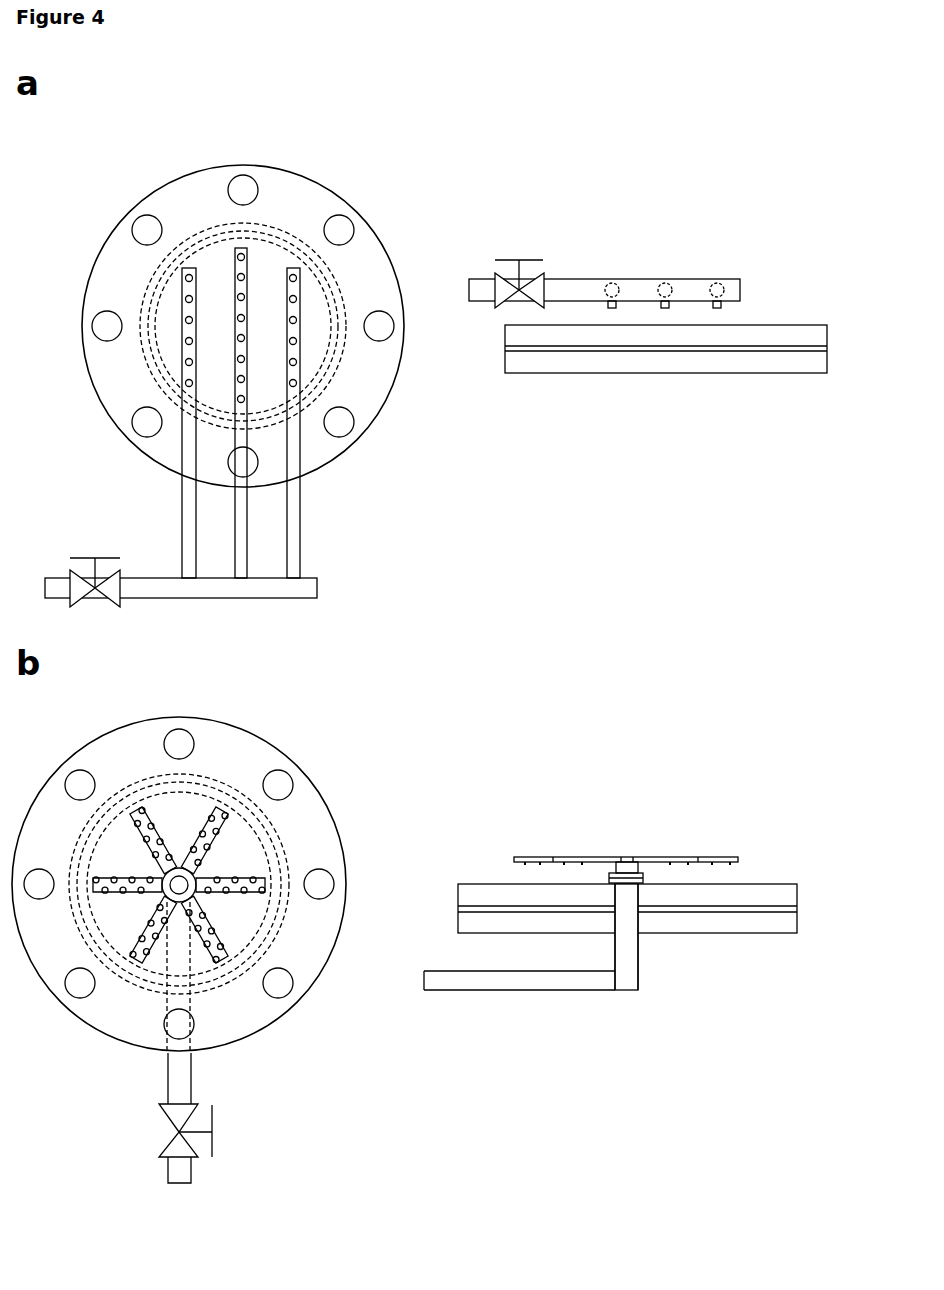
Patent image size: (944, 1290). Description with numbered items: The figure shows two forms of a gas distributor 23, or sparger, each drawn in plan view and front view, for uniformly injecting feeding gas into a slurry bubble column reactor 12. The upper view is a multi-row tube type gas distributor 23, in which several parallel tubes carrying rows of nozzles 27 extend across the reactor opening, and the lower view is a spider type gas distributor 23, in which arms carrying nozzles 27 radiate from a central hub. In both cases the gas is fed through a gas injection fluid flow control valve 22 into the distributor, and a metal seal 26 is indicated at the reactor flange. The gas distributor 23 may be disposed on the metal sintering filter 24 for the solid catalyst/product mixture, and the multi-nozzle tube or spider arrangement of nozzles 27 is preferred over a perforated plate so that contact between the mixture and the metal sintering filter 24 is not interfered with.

In FIG. 4A, the slurry bubble column reactor 12 is at (314, 177).
In FIG. 4B, the slurry bubble column reactor 12 is at (331, 795).
In FIG. 4A, the gas injection fluid flow control valve 22 is at (70, 570).
In FIG. 4B, the gas injection fluid flow control valve 22 is at (213, 1118).
In FIG. 4A, the gas distributor 23 is at (598, 279).
In FIG. 4B, the gas distributor 23 is at (590, 857).
In FIG. 4A, the metal sintering filter 24 is at (505, 348).
In FIG. 4A, the metal seal 26 is at (343, 303).
In FIG. 4A, the nozzle 27 is at (298, 266).
In FIG. 4B, the nozzle 27 is at (228, 818).